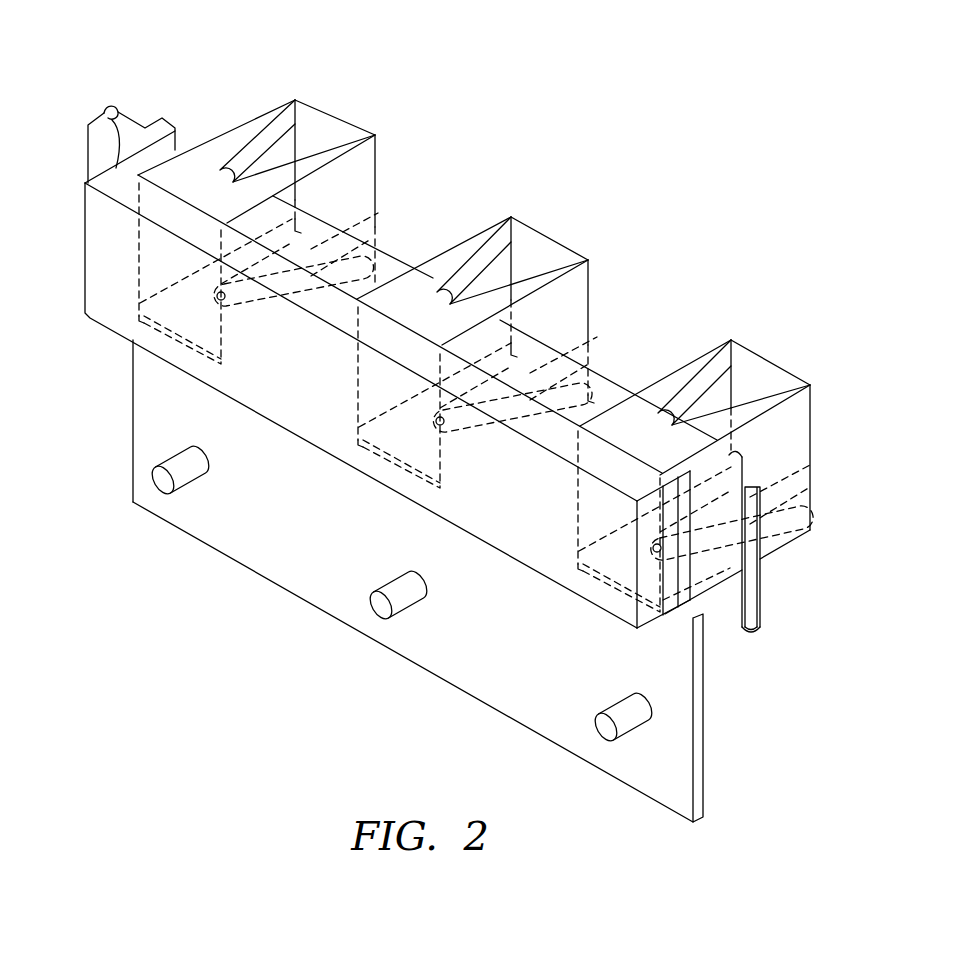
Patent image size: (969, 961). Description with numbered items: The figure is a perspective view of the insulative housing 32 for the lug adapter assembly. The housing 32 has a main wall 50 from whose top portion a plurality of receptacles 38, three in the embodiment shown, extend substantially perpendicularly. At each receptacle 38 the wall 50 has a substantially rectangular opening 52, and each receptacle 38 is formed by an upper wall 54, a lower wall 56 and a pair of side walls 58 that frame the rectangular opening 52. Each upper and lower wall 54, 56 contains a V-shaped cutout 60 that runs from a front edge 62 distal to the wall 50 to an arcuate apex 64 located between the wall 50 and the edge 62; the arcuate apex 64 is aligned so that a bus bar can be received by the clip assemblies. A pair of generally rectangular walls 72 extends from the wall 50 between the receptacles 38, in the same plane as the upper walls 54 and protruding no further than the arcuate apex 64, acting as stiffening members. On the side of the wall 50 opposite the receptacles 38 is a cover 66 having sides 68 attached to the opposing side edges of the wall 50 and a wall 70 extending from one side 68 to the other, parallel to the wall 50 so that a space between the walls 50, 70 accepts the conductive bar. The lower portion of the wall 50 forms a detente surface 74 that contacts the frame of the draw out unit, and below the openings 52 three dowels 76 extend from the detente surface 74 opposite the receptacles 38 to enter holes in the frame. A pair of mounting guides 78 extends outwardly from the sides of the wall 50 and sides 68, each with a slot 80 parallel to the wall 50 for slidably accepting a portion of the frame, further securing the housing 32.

The insulative housing 32 is at (320, 740).
The receptacle 38 is at (300, 57).
The wall 50 is at (695, 700).
The rectangular opening 52 is at (140, 305).
The upper wall 54 is at (210, 167).
The lower wall 56 is at (323, 213).
The side wall 58 is at (248, 103).
The V-shaped cutout 60 is at (313, 132).
The edge 62 is at (372, 130).
The arcuate apex 64 is at (237, 168).
The cover 66 is at (85, 275).
The side 68 is at (85, 207).
The wall 70 is at (280, 363).
The wall 72 is at (382, 214).
The detente surface 74 is at (525, 645).
The dowel 76 is at (185, 477).
The mounting guide 78 is at (137, 120).
The slot 80 is at (100, 113).